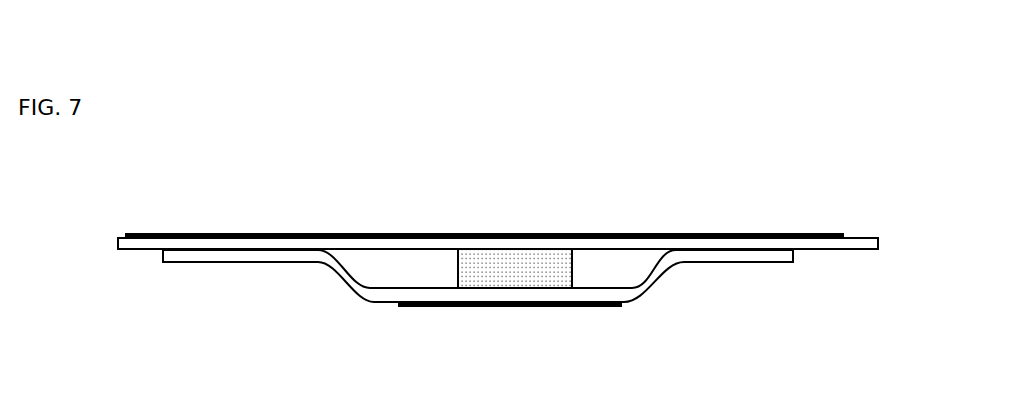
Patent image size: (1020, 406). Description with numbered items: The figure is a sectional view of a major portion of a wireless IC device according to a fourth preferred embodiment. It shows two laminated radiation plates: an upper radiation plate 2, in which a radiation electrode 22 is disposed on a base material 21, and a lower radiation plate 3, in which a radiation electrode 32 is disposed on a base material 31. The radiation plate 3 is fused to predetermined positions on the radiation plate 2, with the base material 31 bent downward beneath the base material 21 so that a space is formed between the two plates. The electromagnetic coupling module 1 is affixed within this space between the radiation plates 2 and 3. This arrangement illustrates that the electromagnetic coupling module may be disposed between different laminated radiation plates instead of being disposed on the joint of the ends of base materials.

The electromagnetic coupling module 1 is at (565, 272).
The radiation plate 2 is at (489, 195).
The base material 21 is at (121, 256).
The radiation electrode 22 is at (112, 172).
The radiation plate 3 is at (478, 326).
The base material 31 is at (653, 282).
The radiation electrode 32 is at (605, 306).